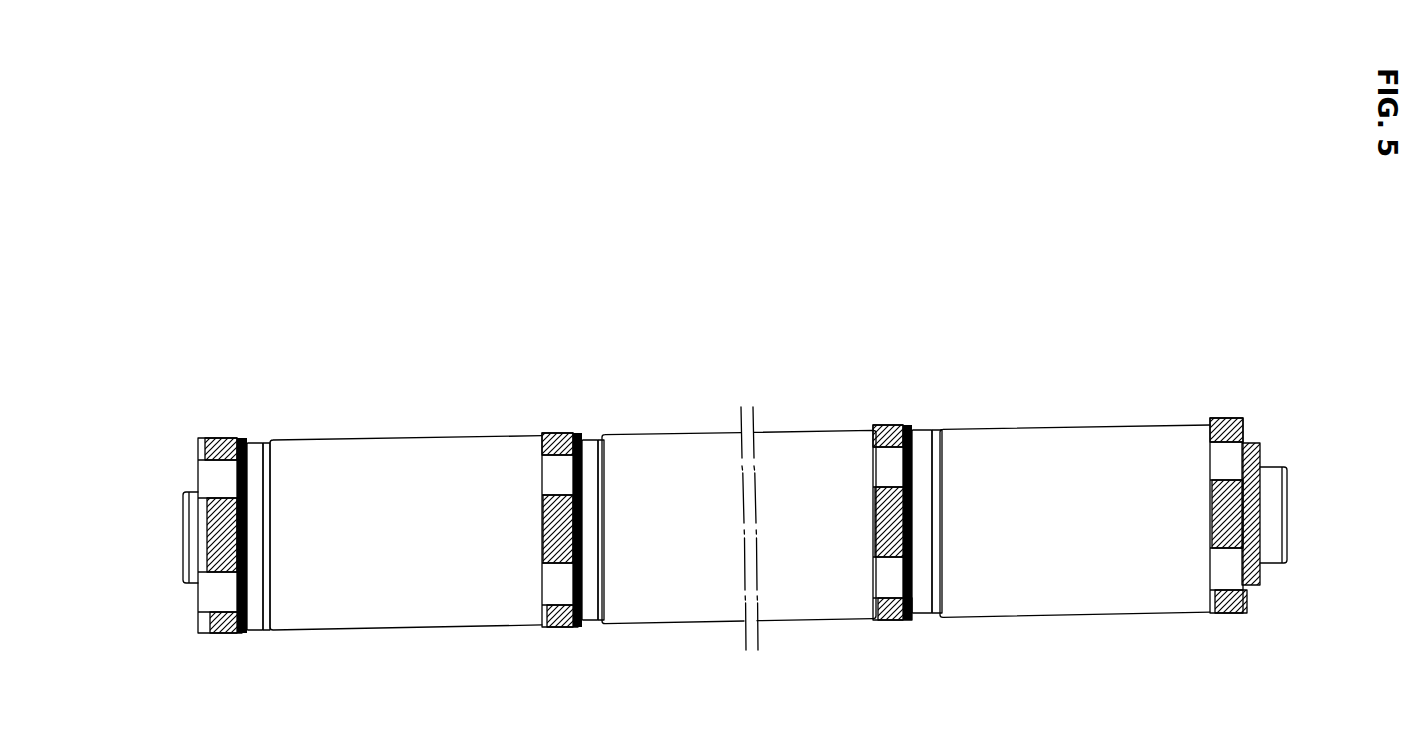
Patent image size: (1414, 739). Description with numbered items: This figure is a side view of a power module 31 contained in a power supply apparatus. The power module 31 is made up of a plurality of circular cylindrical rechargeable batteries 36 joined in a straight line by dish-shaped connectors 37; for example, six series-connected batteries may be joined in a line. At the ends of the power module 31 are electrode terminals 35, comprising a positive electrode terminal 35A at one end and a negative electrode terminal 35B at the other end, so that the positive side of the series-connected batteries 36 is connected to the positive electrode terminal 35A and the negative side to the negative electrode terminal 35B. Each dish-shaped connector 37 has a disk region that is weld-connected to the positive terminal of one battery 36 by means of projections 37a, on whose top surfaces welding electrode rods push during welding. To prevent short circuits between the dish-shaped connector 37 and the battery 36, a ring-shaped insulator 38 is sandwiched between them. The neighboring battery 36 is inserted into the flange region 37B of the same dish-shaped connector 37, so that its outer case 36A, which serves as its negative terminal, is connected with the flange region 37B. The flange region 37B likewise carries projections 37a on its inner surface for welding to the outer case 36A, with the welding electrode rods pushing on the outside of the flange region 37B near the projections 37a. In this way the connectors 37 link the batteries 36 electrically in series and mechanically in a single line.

The power module 31 is at (681, 334).
The electrode terminals 35 is at (172, 498).
The positive electrode terminal 35A is at (192, 545).
The negative electrode terminal 35B is at (1287, 560).
The circular cylindrical rechargeable battery 36 is at (403, 645).
The outer case 36A is at (437, 588).
The dish-shaped connector 37 is at (233, 405).
The projections 37a is at (243, 527).
The flange region 37B is at (222, 565).
The ring-shaped insulator 38 is at (255, 440).